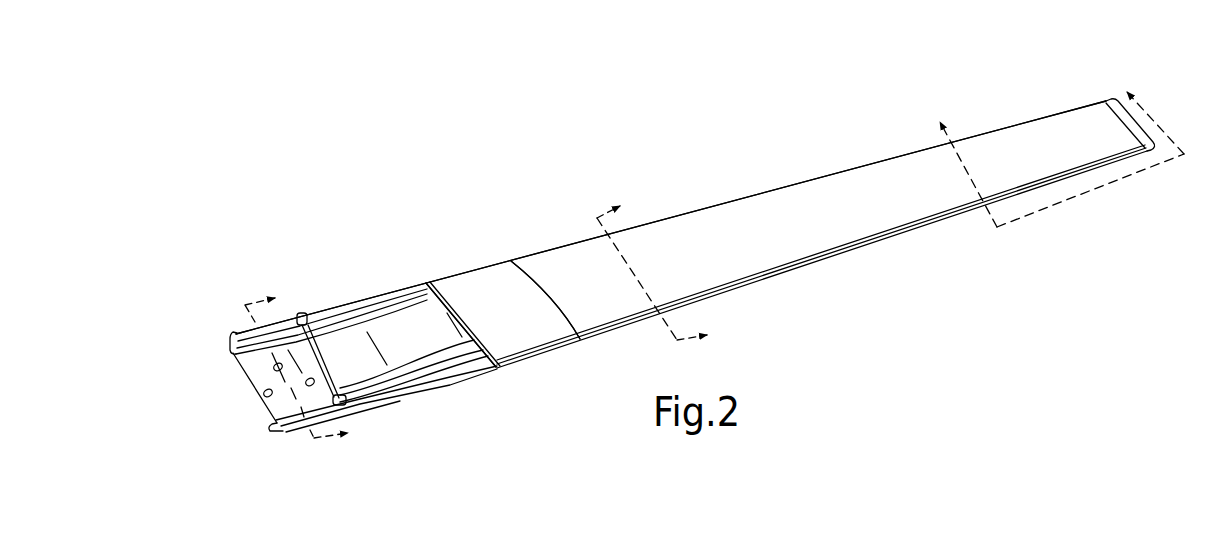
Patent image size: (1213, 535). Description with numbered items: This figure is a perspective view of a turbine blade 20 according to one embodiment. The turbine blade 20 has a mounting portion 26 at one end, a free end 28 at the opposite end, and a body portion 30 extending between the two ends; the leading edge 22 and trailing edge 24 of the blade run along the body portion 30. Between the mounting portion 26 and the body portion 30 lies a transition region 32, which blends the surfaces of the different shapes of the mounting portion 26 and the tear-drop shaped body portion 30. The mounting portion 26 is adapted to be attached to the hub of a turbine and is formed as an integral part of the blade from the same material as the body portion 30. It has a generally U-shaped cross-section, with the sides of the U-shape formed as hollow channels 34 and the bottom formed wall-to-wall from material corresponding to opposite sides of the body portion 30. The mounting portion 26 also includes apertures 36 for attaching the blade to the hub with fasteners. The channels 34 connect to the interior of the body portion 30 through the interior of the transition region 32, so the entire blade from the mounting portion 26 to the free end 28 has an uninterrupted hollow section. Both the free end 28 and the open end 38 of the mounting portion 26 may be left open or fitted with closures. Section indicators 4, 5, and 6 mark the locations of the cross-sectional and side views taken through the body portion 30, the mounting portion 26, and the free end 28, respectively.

The turbine blade 20 is at (316, 143).
The leading edge 22 is at (866, 165).
The trailing edge 24 is at (907, 232).
The free end 28 is at (1090, 122).
The body portion 30 is at (723, 227).
The transition region 32 is at (386, 294).
The mounting portion 26 is at (292, 318).
The open end 38 is at (232, 352).
The hollow channels 34 is at (232, 348).
The apertures 36 is at (306, 386).
The section line 4- 4 is at (665, 263).
The section line 5- 5 is at (307, 365).
The section line 6- 6 is at (1062, 153).